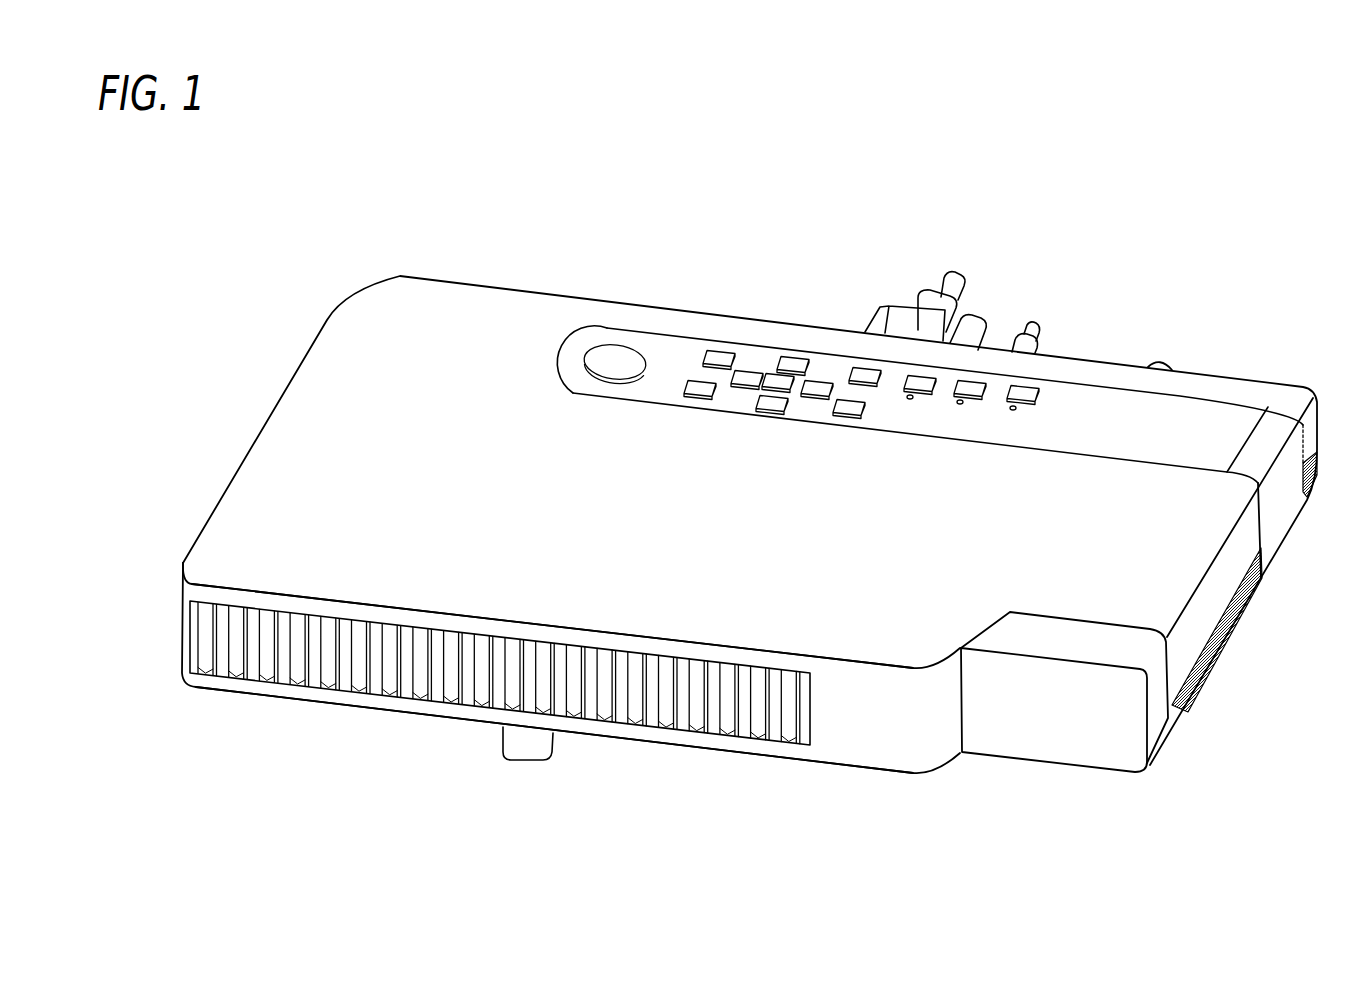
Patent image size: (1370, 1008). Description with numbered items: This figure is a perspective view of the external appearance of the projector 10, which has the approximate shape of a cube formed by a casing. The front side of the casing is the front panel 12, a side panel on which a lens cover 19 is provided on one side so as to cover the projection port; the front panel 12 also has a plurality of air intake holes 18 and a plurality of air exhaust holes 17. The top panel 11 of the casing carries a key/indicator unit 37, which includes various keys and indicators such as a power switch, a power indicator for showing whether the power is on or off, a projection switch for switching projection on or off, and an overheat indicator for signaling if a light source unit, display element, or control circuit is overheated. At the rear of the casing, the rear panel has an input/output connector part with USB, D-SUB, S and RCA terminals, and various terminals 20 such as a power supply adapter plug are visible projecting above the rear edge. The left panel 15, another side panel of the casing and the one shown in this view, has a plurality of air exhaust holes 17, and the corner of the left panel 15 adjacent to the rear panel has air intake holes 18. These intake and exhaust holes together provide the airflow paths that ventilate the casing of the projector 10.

The projector 10 is at (709, 227).
The top panel 11 is at (523, 307).
The front panel 12 is at (856, 732).
The left panel 15 is at (1218, 580).
The air exhaust holes 17 is at (382, 677).
The air intake holes 18 is at (1305, 500).
The lens cover 19 is at (1093, 740).
The terminals 20 is at (990, 267).
The key/indicator unit 37 is at (794, 307).